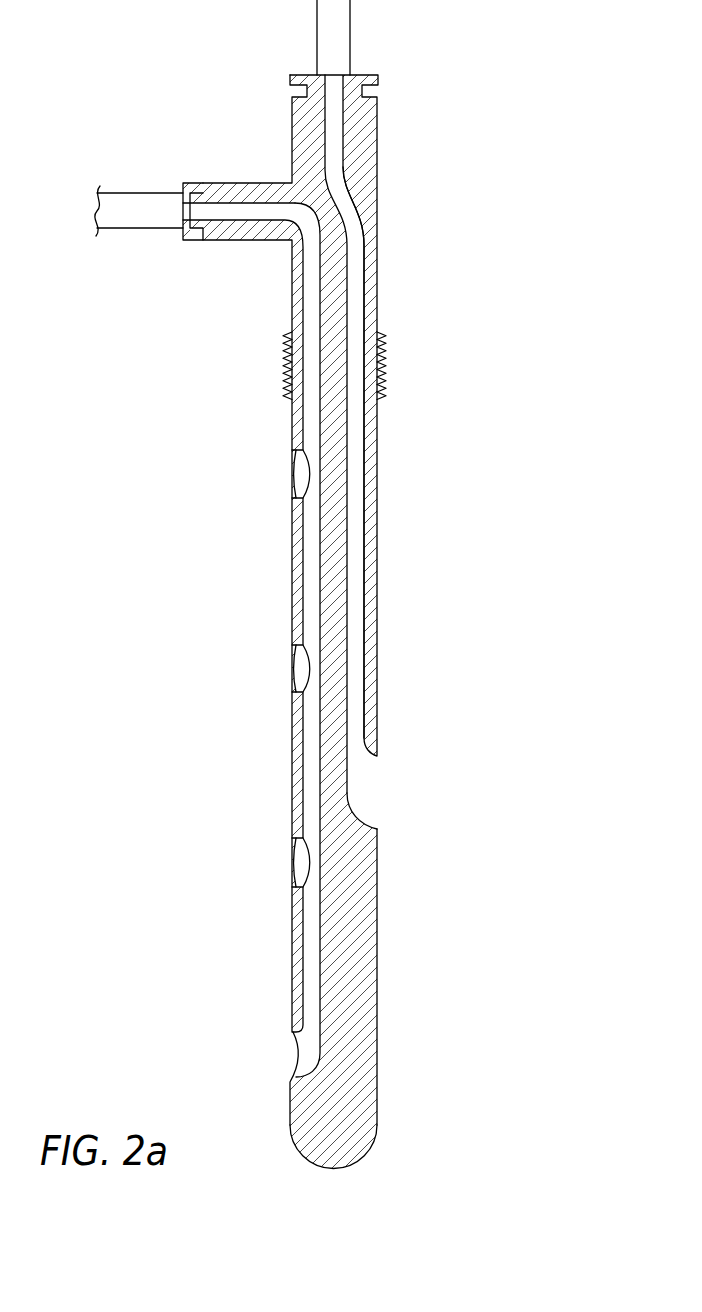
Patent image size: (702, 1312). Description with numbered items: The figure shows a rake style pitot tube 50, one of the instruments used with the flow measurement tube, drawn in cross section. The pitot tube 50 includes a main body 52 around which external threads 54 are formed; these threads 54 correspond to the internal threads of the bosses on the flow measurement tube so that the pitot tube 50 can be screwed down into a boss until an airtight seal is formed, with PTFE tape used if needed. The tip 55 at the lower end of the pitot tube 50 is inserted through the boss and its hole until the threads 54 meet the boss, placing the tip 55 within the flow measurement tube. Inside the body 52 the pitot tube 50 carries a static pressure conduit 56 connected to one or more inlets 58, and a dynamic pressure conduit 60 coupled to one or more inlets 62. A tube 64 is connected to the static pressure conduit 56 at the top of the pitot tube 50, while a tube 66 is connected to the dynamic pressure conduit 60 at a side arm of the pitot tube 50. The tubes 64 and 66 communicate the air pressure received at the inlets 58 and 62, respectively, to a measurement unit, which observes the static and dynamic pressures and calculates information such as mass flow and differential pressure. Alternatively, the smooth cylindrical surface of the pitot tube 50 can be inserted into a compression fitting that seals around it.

The pitot tube 50 is at (338, 620).
The main body 52 is at (362, 152).
The external threads 54 is at (283, 370).
The tip 55 is at (330, 1170).
The static pressure conduit 56 is at (358, 590).
The inlets 58 is at (373, 785).
The dynamic pressure conduit 60 is at (310, 573).
The inlets 62 is at (292, 670).
The tube 64 is at (323, 43).
The tube 66 is at (138, 203).